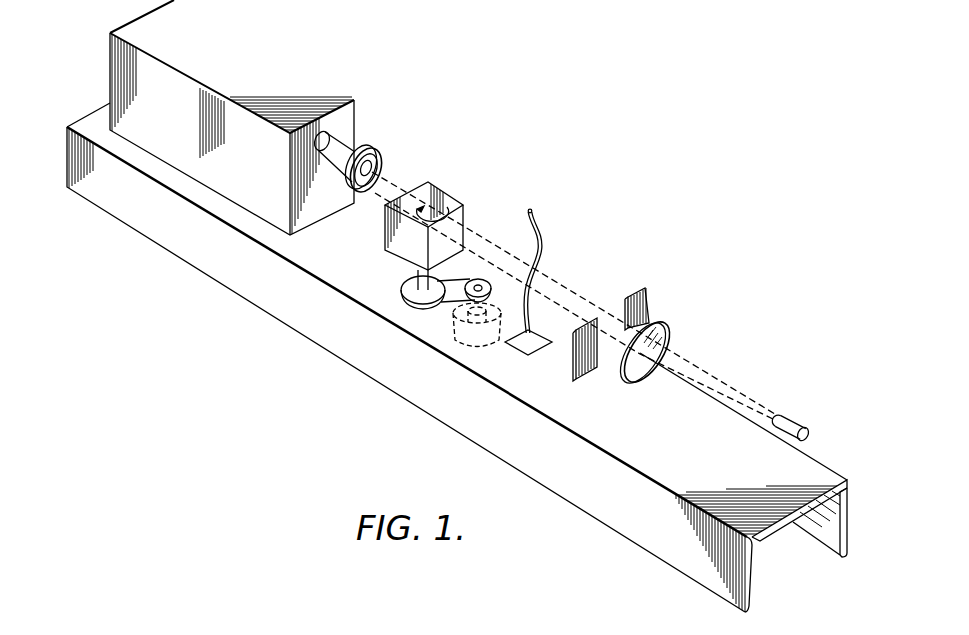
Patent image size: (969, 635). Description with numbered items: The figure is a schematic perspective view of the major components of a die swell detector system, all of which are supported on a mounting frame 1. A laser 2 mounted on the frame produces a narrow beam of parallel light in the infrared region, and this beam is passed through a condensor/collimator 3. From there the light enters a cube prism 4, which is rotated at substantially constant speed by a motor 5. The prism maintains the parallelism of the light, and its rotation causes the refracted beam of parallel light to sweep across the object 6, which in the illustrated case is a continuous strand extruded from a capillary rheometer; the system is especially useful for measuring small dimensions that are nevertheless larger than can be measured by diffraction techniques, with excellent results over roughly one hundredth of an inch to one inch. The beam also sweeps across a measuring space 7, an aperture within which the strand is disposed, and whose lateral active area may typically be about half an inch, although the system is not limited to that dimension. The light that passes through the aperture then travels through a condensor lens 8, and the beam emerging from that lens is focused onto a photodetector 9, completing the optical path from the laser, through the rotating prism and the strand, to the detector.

The mounting frame 1 is at (157, 223).
The laser 2 is at (253, 40).
The condensor/collimator 3 is at (362, 145).
The cube prism 4 is at (447, 192).
The motor 5 is at (488, 350).
The object 6 is at (541, 242).
The measuring space 7 is at (637, 290).
The condensor lens 8 is at (668, 330).
The photodetector 9 is at (797, 415).